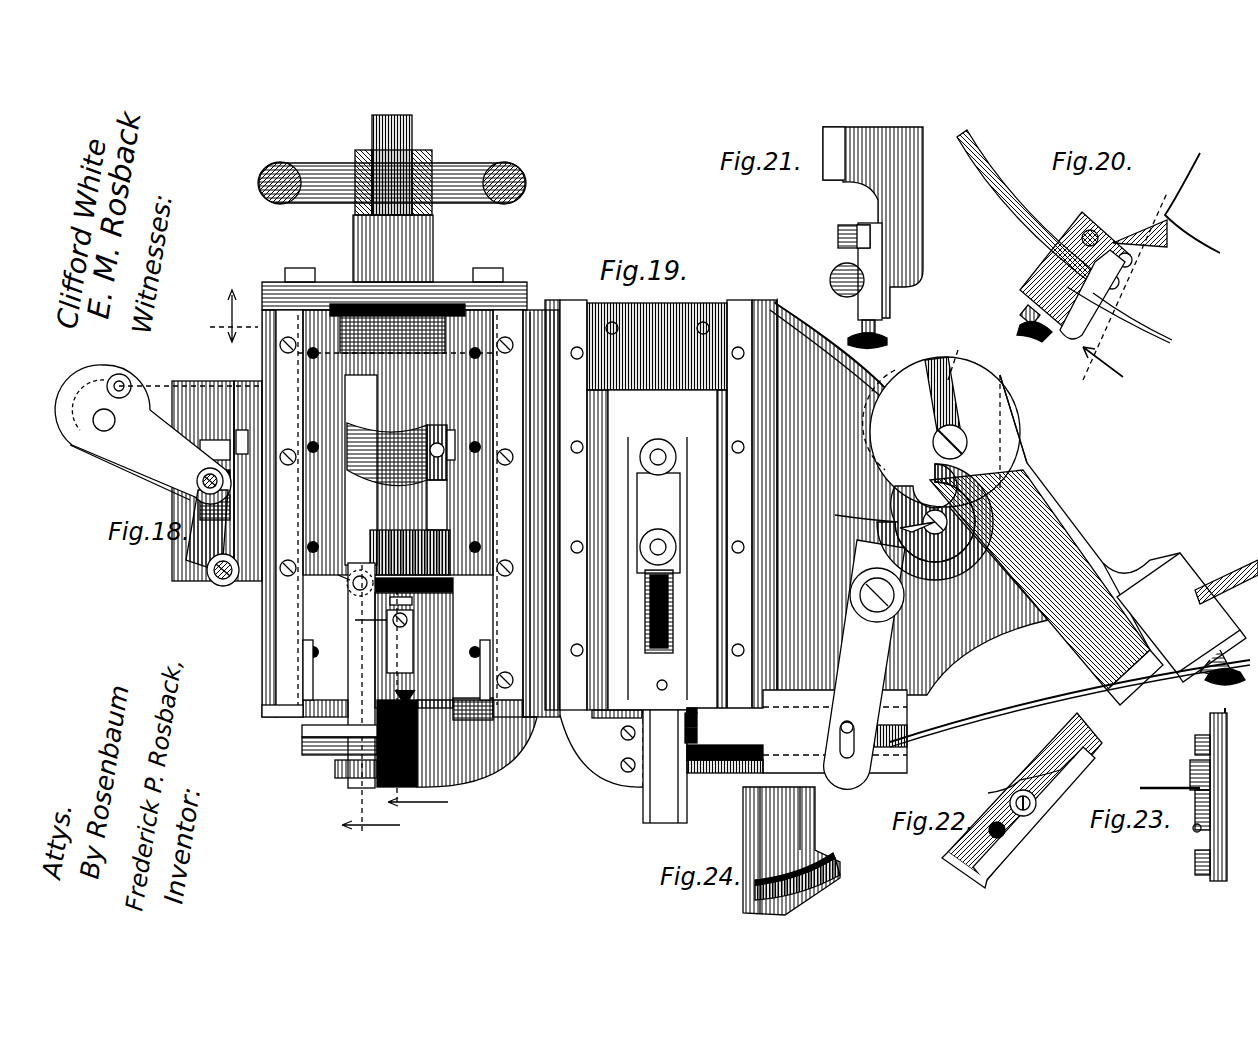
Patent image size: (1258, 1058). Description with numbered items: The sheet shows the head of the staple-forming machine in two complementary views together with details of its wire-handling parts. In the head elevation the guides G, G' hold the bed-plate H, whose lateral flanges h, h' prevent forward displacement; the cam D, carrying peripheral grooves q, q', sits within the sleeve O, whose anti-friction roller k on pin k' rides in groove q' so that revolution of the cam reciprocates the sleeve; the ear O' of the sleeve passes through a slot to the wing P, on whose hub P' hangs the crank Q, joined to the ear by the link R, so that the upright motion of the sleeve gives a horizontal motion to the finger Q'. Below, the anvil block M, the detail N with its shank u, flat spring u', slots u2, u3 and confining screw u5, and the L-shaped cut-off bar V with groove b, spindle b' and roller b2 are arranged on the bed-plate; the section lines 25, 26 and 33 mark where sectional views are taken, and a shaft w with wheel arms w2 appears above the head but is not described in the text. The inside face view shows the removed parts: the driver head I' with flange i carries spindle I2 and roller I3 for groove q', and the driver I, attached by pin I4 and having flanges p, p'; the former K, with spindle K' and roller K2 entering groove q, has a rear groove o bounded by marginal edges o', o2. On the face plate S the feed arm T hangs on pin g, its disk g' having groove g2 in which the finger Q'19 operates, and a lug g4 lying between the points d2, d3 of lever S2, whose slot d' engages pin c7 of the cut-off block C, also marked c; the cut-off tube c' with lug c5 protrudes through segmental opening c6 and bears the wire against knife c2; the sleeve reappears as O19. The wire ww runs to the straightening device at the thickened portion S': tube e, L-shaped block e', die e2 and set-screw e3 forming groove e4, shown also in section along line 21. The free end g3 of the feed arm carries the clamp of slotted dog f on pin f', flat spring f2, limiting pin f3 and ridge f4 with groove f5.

In FIG. 19, the screw shaft w is at (412, 126).
In FIG. 19, the hand wheel arms w2 is at (288, 165).
In FIG. 19, the lateral guide flange h is at (272, 474).
In FIG. 19, the lateral guide flange h' is at (496, 470).
In FIG. 19, the section line 25 is at (227, 316).
In FIG. 19, the section line 26 is at (371, 835).
In FIG. 19, the section line 33 is at (667, 844).
In FIG. 19, the bed-plate H is at (494, 738).
In FIG. 19, the cam D is at (398, 442).
In FIG. 19, the guide G is at (282, 513).
In FIG. 19, the guide G' is at (526, 513).
In FIG. 19, the face plate S is at (864, 505).
In FIG. 21, the face plate S is at (881, 222).
In FIG. 20, the thickened portion of face plate S' is at (1166, 216).
In FIG. 19, the lever S2 is at (937, 588).
In FIG. 19, the flange of driver head i is at (592, 390).
In FIG. 19, the driver I is at (665, 766).
In FIG. 19, the driver head I' is at (662, 550).
In FIG. 19, the spindle I2 is at (664, 452).
In FIG. 19, the anti-friction roller I3 is at (652, 453).
In FIG. 19, the pin I4 is at (667, 682).
In FIG. 19, the former K is at (658, 523).
In FIG. 19, the anti-friction roller K2 is at (655, 546).
In FIG. 19, the spindle K' is at (682, 531).
In FIG. 19, the groove o is at (677, 702).
In FIG. 19, the marginal edge o' is at (689, 623).
In FIG. 19, the marginal edge o2 is at (648, 632).
In FIG. 18, the sleeve O is at (249, 450).
In FIG. 18, the ear O' is at (223, 591).
In FIG. 19, the sleeve O19 is at (396, 470).
In FIG. 19, the cam groove q is at (410, 538).
In FIG. 19, the cam groove q' is at (387, 446).
In FIG. 19, the anti-friction roller k is at (450, 445).
In FIG. 19, the pin k' is at (461, 456).
In FIG. 19, the pin g is at (964, 445).
In FIG. 19, the disk g' is at (941, 428).
In FIG. 19, the groove g2 is at (955, 410).
In FIG. 19, the free end of feed arm g3 is at (1131, 669).
In FIG. 19, the lug g4 is at (960, 500).
In FIG. 19, the groove b is at (322, 751).
In FIG. 19, the spindle b' is at (344, 588).
In FIG. 19, the anti-friction roller b2 is at (348, 578).
In FIG. 19, the upper extremity of detail u is at (378, 656).
In FIG. 19, the flat spring u' is at (417, 655).
In FIG. 19, the slot u2 is at (412, 676).
In FIG. 19, the slot u3 is at (413, 620).
In FIG. 19, the screw u5 is at (359, 619).
In FIG. 19, the detail N is at (414, 650).
In FIG. 19, the cut-off bar V is at (293, 780).
In FIG. 19, the anvil block M is at (418, 740).
In FIG. 19, the cut-off block C is at (797, 731).
In FIG. 19, the cut-off block c is at (1226, 619).
In FIG. 19, the cut-off tube c' is at (905, 739).
In FIG. 19, the knife c2 is at (692, 708).
In FIG. 19, the lug c5 is at (698, 720).
In FIG. 19, the segmental opening c6 is at (698, 737).
In FIG. 19, the pin c7 is at (842, 745).
In FIG. 19, the lateral flange of driver p is at (628, 799).
In FIG. 19, the lateral flange of driver p' is at (698, 793).
In FIG. 19, the slot d' is at (877, 644).
In FIG. 19, the point of Y d2 is at (945, 545).
In FIG. 19, the point of Y d3 is at (856, 520).
In FIG. 19, the feed arm T is at (1040, 532).
In FIG. 22, the feed arm T is at (1025, 796).
In FIG. 23, the feed arm T is at (1227, 794).
In FIG. 24, the feed arm T is at (791, 851).
In FIG. 19, the wire ww is at (1022, 714).
In FIG. 20, the wire ww is at (1119, 324).
In FIG. 18, the wing P is at (217, 481).
In FIG. 18, the hub P' is at (92, 444).
In FIG. 18, the crank Q is at (143, 434).
In FIG. 18, the finger Q' is at (184, 369).
In FIG. 19, the finger Q'19 is at (959, 333).
In FIG. 18, the link R is at (200, 552).
In FIG. 20, the tube e is at (1032, 210).
In FIG. 21, the L-shaped block e' is at (889, 271).
In FIG. 20, the L-shaped block e' is at (1092, 295).
In FIG. 21, the die e2 is at (860, 232).
In FIG. 20, the die e2 is at (1132, 262).
In FIG. 21, the set-screw e3 is at (885, 337).
In FIG. 20, the set-screw e3 is at (1039, 337).
In FIG. 21, the groove e4 is at (835, 272).
In FIG. 20, the groove e4 is at (1118, 297).
In FIG. 20, the section line 21 is at (1121, 293).
In FIG. 22, the slotted dog f is at (1034, 827).
In FIG. 23, the slotted dog f is at (1185, 805).
In FIG. 22, the pin f' is at (1009, 847).
In FIG. 23, the pin f' is at (1173, 838).
In FIG. 22, the flat spring f2 is at (1068, 780).
In FIG. 23, the flat spring f2 is at (1175, 775).
In FIG. 22, the pin f3 is at (1030, 815).
In FIG. 23, the pin f3 is at (1220, 800).
In FIG. 22, the ridge f4 is at (964, 877).
In FIG. 23, the ridge f4 is at (1195, 865).
In FIG. 24, the ridge f4 is at (842, 866).
In FIG. 24, the groove f5 is at (828, 855).